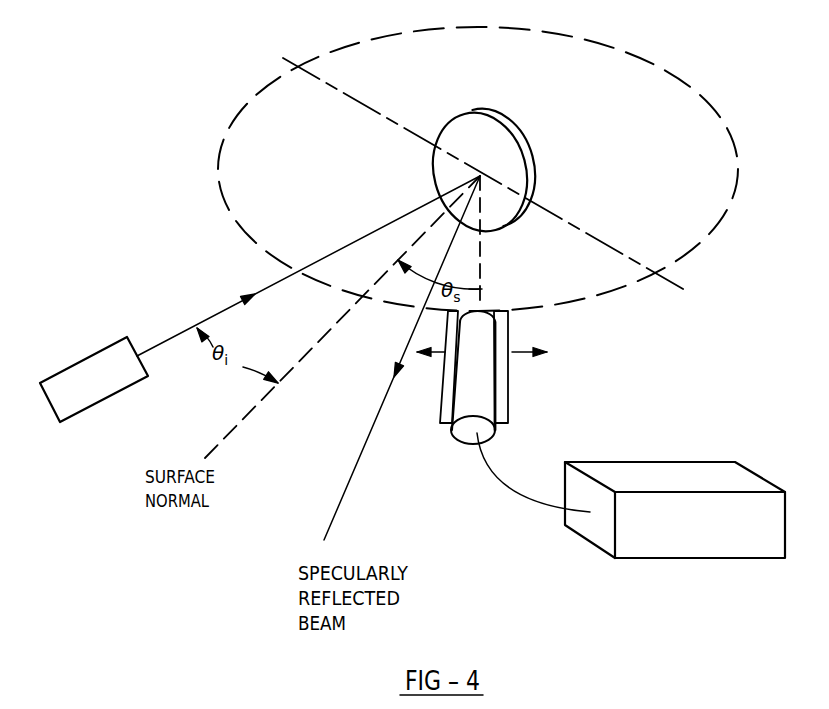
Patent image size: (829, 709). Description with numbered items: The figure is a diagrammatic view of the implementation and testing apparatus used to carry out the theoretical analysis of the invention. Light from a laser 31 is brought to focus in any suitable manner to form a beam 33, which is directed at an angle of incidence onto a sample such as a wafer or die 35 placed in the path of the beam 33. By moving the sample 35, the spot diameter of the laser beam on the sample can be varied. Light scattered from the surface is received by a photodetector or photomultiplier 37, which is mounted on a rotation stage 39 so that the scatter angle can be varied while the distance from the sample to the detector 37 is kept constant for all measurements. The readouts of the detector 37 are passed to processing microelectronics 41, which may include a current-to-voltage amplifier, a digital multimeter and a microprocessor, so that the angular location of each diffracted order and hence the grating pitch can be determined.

The laser 31 is at (93, 408).
The beam 33 is at (155, 347).
The sample (wafer or die) 35 is at (528, 167).
The photodetector or photomultiplier 37 is at (458, 440).
The rotation stage 39 is at (510, 410).
The processing microelectronics 41 is at (688, 460).